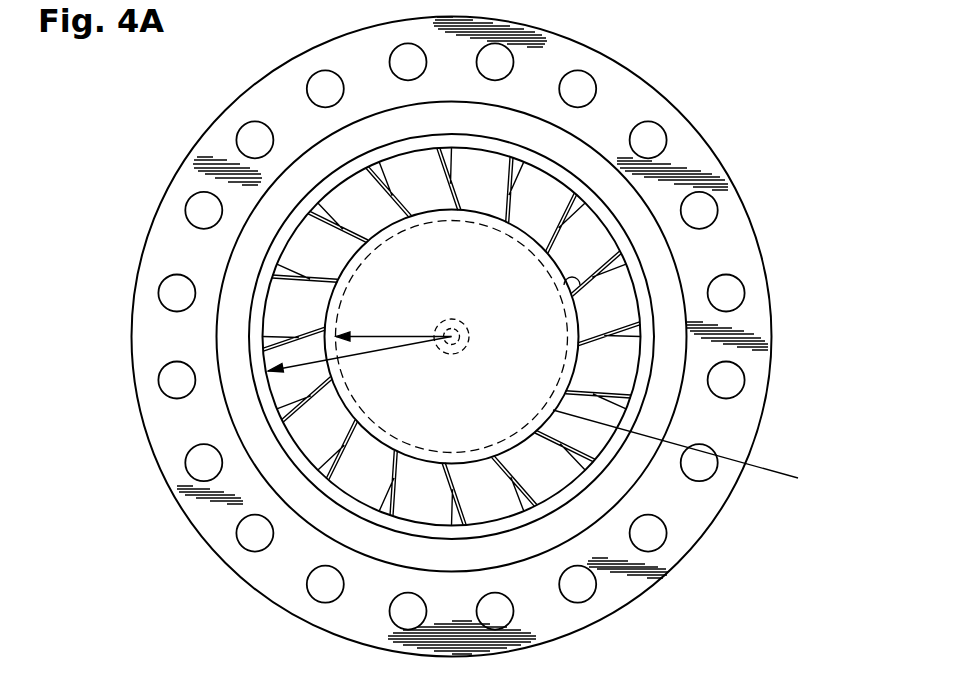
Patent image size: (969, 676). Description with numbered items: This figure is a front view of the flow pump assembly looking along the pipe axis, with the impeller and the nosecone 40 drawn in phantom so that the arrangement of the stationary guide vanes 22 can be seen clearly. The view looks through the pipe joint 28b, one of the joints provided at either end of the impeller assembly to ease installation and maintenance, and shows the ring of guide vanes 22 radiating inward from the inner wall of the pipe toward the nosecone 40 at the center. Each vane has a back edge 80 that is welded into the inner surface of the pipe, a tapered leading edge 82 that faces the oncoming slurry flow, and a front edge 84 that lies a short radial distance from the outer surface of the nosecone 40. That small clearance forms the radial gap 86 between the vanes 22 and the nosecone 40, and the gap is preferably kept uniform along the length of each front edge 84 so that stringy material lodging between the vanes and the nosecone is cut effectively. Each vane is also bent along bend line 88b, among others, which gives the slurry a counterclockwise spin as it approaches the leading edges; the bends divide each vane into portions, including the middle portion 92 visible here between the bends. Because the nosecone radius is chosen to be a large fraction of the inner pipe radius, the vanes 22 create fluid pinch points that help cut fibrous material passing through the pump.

The stationary guide vanes 22 is at (333, 190).
The pipe joint 28b is at (702, 535).
The nosecone 40 is at (478, 416).
The back edge 80 is at (587, 232).
The tapered leading edge 82 is at (564, 285).
The front edge 84 is at (536, 242).
The radial gap 86 is at (690, 452).
The bend line 88b is at (587, 232).
The middle portion 92 is at (522, 220).